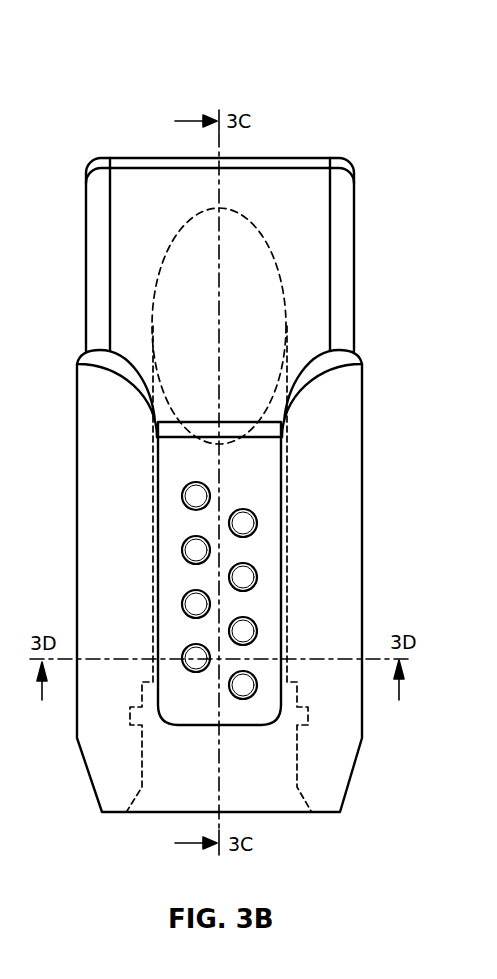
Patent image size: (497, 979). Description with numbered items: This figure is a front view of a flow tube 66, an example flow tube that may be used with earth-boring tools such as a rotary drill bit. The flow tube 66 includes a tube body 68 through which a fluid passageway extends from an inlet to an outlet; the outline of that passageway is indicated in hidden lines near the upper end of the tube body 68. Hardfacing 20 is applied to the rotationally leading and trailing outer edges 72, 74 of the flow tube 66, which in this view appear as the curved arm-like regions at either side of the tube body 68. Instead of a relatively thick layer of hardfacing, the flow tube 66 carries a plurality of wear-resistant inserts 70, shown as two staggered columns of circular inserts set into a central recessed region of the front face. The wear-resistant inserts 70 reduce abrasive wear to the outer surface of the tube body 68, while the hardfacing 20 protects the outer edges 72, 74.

The flow tube 66 is at (124, 92).
The tube body 68 is at (305, 237).
The wear-resistant inserts 70 is at (192, 552).
The rotationally leading outer edge 72 is at (132, 398).
The rotationally trailing outer edge 74 is at (316, 393).
The hardfacing 20 is at (102, 552).